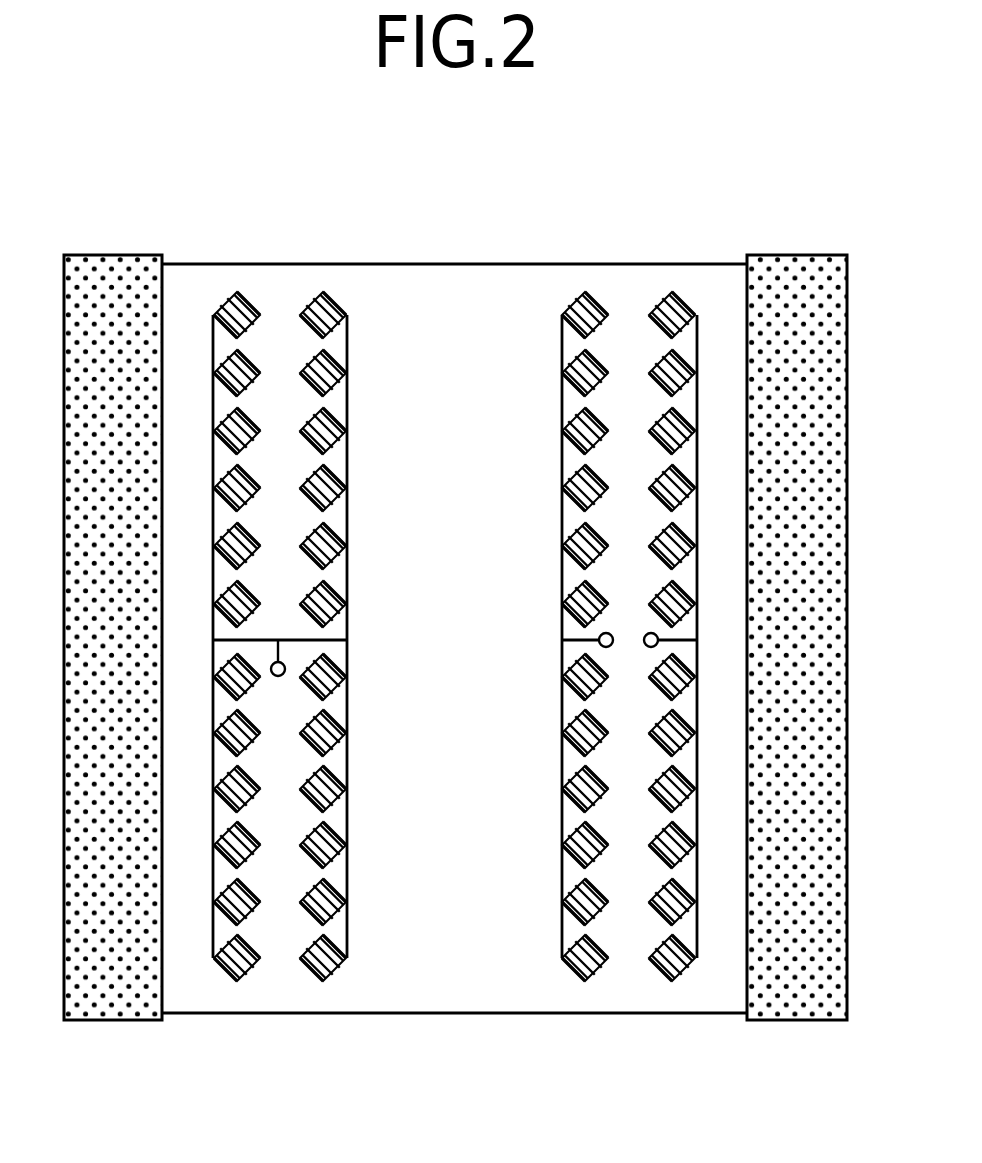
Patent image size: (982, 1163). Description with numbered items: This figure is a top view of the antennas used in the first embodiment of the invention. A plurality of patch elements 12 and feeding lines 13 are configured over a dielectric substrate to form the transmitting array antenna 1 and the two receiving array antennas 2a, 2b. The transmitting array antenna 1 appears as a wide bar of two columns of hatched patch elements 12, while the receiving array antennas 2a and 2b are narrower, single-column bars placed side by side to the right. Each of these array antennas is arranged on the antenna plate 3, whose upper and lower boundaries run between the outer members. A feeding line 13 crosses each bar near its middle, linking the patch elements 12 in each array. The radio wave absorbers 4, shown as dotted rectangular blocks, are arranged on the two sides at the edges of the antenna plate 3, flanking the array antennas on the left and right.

The transmitting array antenna 1 is at (316, 674).
The receiving array antenna 2a is at (538, 992).
The receiving array antenna 2b is at (637, 992).
The antenna plate 3 is at (491, 273).
The radio wave absorber 4 is at (113, 262).
The patch element 12 is at (347, 476).
The feeding line 13 is at (348, 633).